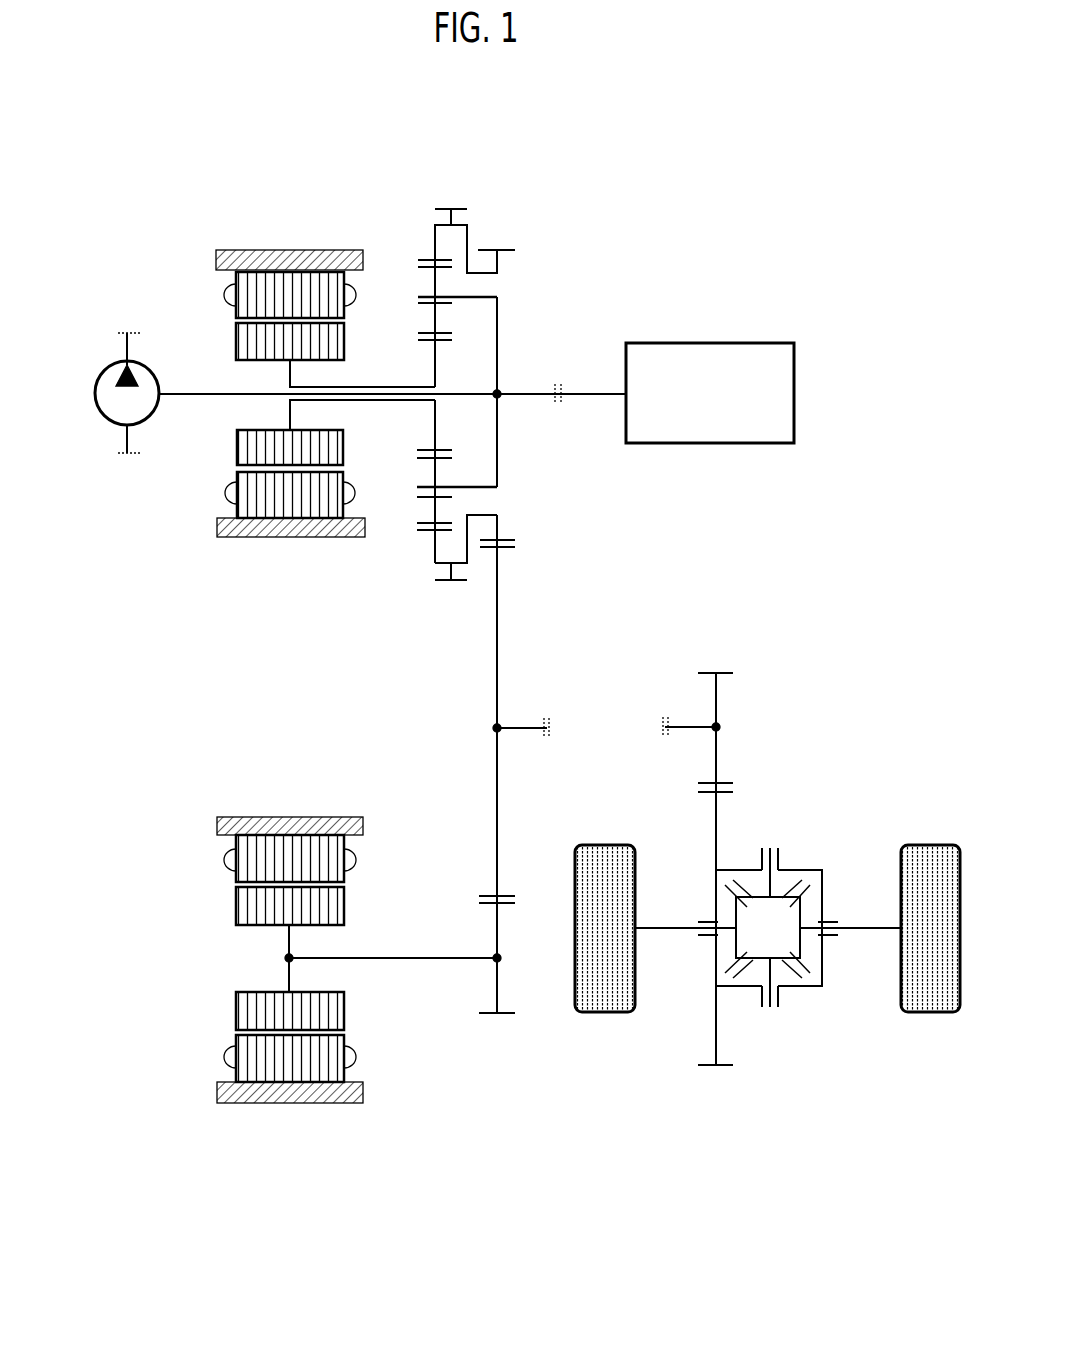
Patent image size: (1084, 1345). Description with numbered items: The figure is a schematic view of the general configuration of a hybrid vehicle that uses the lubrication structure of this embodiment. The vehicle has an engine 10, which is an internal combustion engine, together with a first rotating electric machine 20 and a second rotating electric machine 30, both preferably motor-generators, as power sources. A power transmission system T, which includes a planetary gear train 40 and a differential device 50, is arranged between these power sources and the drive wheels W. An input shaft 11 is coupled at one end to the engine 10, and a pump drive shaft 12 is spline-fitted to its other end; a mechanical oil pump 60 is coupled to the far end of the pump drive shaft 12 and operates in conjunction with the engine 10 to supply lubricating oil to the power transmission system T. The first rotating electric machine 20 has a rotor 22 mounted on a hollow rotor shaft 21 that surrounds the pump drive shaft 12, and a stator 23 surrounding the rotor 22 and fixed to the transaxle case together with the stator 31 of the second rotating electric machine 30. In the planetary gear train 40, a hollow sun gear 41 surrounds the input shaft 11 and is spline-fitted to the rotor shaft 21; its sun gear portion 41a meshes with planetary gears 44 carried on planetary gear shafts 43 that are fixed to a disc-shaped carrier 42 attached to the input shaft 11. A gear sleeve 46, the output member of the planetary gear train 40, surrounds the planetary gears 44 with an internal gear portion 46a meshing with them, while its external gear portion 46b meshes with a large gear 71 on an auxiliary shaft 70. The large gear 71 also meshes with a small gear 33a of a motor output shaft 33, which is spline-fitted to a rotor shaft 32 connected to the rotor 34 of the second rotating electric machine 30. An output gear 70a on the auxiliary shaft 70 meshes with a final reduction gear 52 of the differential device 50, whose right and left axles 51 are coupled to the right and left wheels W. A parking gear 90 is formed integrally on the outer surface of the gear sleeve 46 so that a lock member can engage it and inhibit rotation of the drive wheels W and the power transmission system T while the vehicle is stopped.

The engine 10 is at (701, 343).
The input shaft 11 is at (522, 390).
The pump drive shaft 12 is at (176, 392).
The first rotating electric machine 20 is at (276, 366).
The rotor shaft 21 is at (290, 383).
The rotor 22 is at (240, 446).
The stator 23 is at (288, 275).
The second rotating electric machine 30 is at (240, 933).
The stator 31 is at (288, 840).
The rotor shaft 32 is at (289, 948).
The motor output shaft 33 is at (403, 958).
The small gear 33a is at (495, 1017).
The rotor 34 is at (240, 905).
The planetary gear train 40 is at (491, 363).
The sun gear 41 is at (435, 372).
The sun gear portion 41a is at (418, 455).
The carrier 42 is at (498, 300).
The planetary gear shafts 43 is at (465, 487).
The planetary gear 44 is at (417, 525).
The gear sleeve 46 is at (435, 232).
The internal gear portion 46a is at (418, 260).
The external gear portion 46b is at (499, 249).
The differential device 50 is at (768, 994).
The axles 51 is at (696, 920).
The final reduction gear 52 is at (710, 1068).
The mechanical oil pump 60 is at (110, 400).
The auxiliary shaft 70 is at (520, 728).
The output gear 70a is at (718, 673).
The large gear 71 is at (515, 543).
The parking gear 90 is at (438, 584).
The drive wheels W is at (603, 850).
The power transmission system T is at (762, 1218).